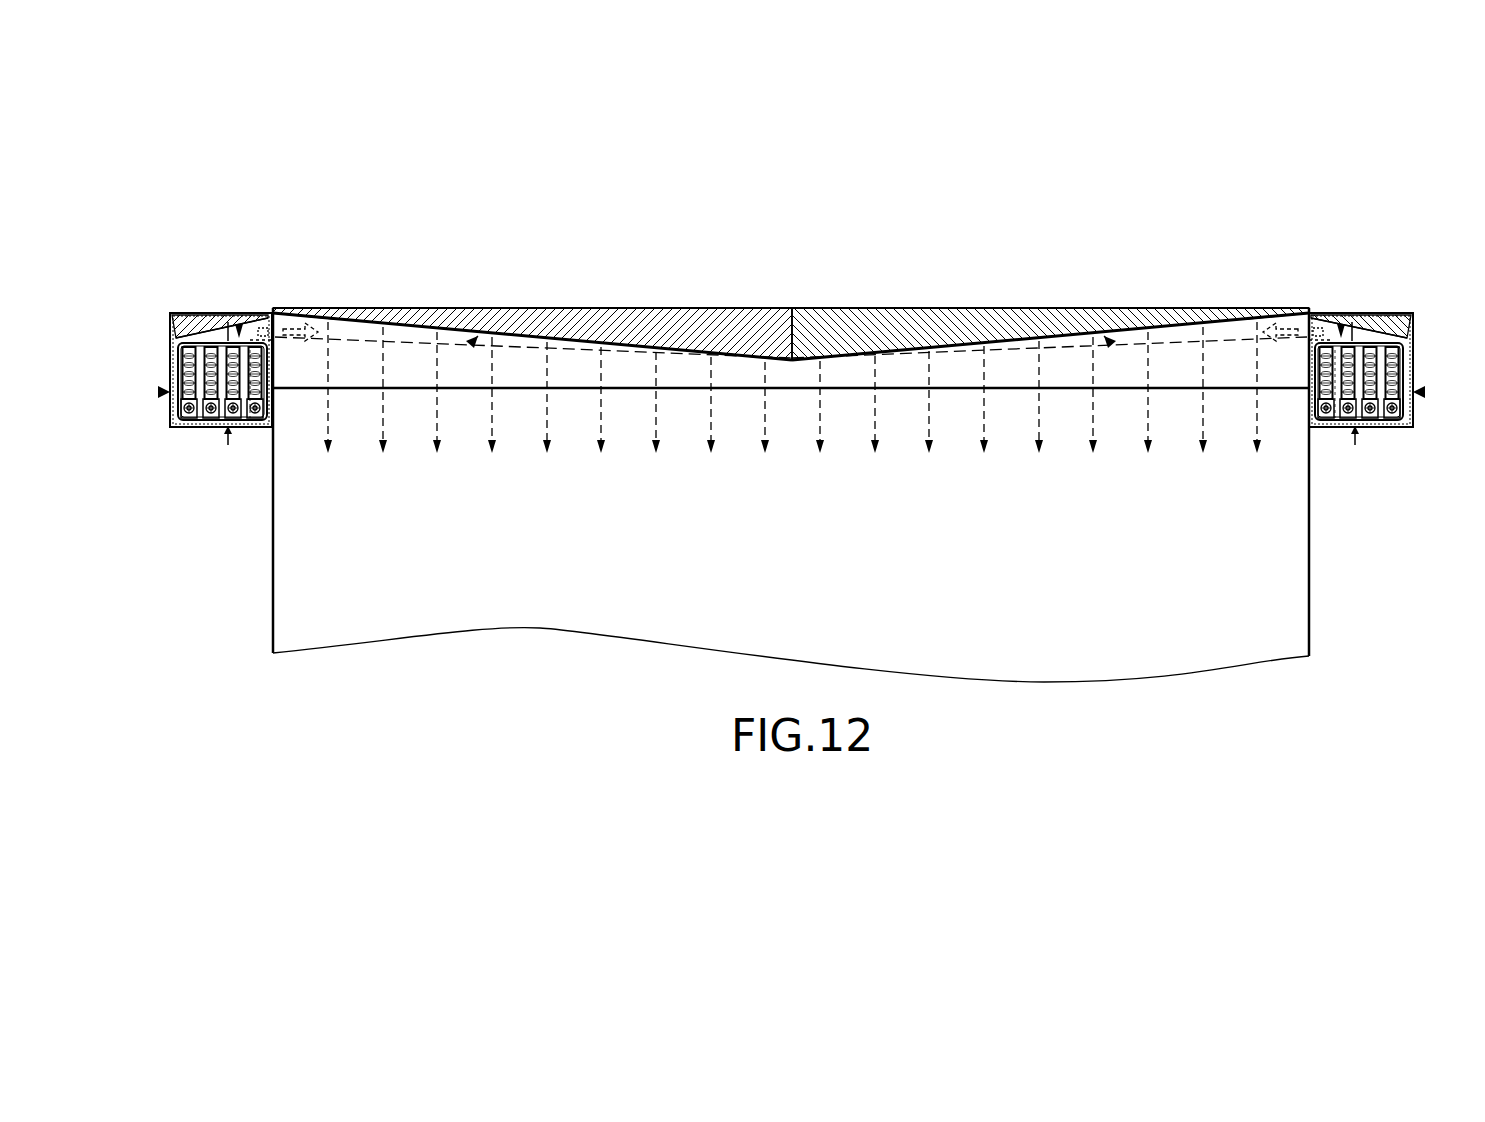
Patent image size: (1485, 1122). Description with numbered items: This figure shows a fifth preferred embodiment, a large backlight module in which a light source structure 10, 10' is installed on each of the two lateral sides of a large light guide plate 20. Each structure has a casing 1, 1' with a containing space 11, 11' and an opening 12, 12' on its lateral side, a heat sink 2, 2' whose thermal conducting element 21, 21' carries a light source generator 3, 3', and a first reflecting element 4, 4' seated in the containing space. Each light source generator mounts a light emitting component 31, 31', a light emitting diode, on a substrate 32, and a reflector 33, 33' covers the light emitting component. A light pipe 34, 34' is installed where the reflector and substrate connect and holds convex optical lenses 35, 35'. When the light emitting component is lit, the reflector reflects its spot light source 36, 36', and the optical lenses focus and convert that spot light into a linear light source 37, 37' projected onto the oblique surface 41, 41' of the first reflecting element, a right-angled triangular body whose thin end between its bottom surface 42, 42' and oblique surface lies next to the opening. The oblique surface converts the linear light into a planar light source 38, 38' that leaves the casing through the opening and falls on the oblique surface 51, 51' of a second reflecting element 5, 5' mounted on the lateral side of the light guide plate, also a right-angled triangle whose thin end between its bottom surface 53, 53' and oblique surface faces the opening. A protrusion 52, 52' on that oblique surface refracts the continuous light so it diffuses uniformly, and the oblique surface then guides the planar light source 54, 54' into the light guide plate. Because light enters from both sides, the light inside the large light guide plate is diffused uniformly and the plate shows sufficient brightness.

The casing 1 is at (1361, 418).
The casing 1' is at (224, 415).
The heat sink 2 is at (1340, 274).
The heat sink 2' is at (246, 274).
The light source generator 3 is at (1435, 429).
The light source generator 3' is at (147, 428).
The first reflecting element 4 is at (1361, 285).
The first reflecting element 4' is at (220, 284).
The second reflecting element 5 is at (1050, 288).
The second reflecting element 5' is at (532, 288).
The light source structure 10 is at (1359, 441).
The light source structure 10' is at (222, 442).
The containing space 11 is at (1321, 279).
The containing space 11' is at (271, 280).
The opening 12 is at (1268, 298).
The opening 12' is at (318, 299).
The light guide plate 20 is at (1298, 604).
The thermal conducting element 21 is at (1390, 381).
The thermal conducting element 21' is at (200, 425).
The light emitting component 31 is at (1359, 445).
The light emitting component 31' is at (222, 444).
The substrate 32 is at (1402, 428).
The reflector 33 is at (1367, 453).
The reflector 33' is at (217, 453).
The light pipe 34 is at (1391, 355).
The light pipe 34' is at (187, 355).
The optical lens 35 is at (1385, 304).
The optical lens 35' is at (196, 304).
The spot light source 36 is at (1341, 455).
The spot light source 36' is at (248, 454).
The linear light source 37 is at (1302, 291).
The linear light source 37' is at (286, 291).
The planar light source 38 is at (1262, 273).
The planar light source 38' is at (326, 274).
The oblique surface 41 is at (1354, 296).
The oblique surface 41' is at (231, 296).
The bottom surface 42 is at (1373, 289).
The bottom surface 42' is at (209, 289).
The oblique surface 51 is at (1049, 304).
The oblique surface 51' is at (533, 304).
The protrusion 52 is at (1089, 304).
The protrusion 52' is at (491, 304).
The bottom surface 53 is at (1050, 262).
The bottom surface 53' is at (532, 262).
The planar light source 54 is at (1050, 334).
The planar light source 54' is at (532, 334).